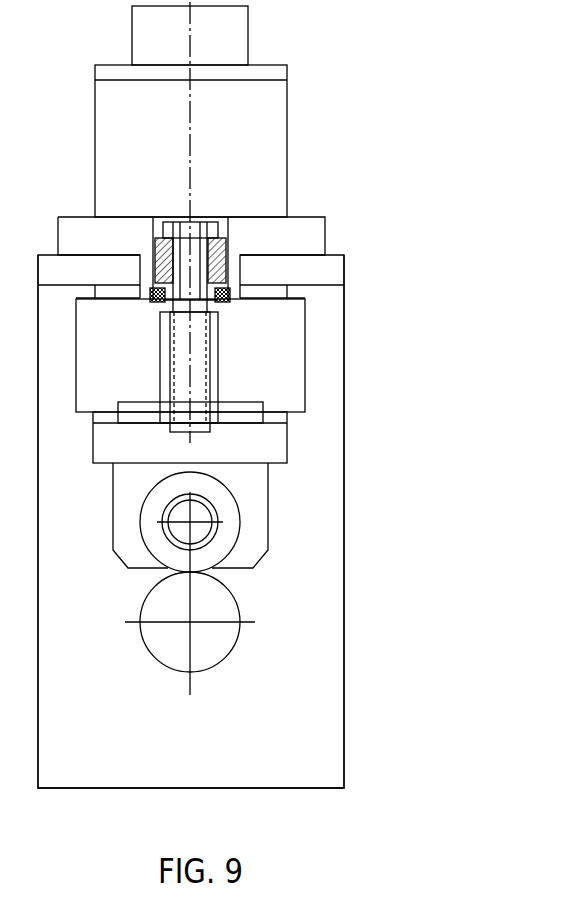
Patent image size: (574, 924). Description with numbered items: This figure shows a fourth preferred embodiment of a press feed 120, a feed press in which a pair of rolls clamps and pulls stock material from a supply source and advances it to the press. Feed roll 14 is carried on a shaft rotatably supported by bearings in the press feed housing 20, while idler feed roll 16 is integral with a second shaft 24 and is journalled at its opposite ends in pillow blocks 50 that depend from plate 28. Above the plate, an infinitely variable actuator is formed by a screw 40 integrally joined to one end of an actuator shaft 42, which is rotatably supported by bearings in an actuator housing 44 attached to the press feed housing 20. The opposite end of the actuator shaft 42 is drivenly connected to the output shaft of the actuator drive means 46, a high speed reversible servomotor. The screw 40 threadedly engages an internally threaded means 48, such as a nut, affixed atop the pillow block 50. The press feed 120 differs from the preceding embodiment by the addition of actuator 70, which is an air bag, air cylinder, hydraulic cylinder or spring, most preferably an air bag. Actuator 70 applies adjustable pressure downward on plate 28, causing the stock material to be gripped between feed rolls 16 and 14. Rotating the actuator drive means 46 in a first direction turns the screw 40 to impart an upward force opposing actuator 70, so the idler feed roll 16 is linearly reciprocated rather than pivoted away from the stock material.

The feed roll 14 is at (229, 661).
The idler feed roll 16 is at (228, 564).
The press feed housing 20 is at (347, 400).
The second shaft 24 is at (218, 538).
The plate 28 is at (291, 457).
The screws 40 is at (215, 306).
The actuator shafts 42 is at (223, 240).
The actuator housings 44 is at (326, 230).
The actuator drive means 46 is at (288, 118).
The internally threaded means 48 is at (228, 370).
The pillow blocks 50 is at (274, 502).
The actuator 70 is at (308, 323).
The press feed 120 is at (347, 448).